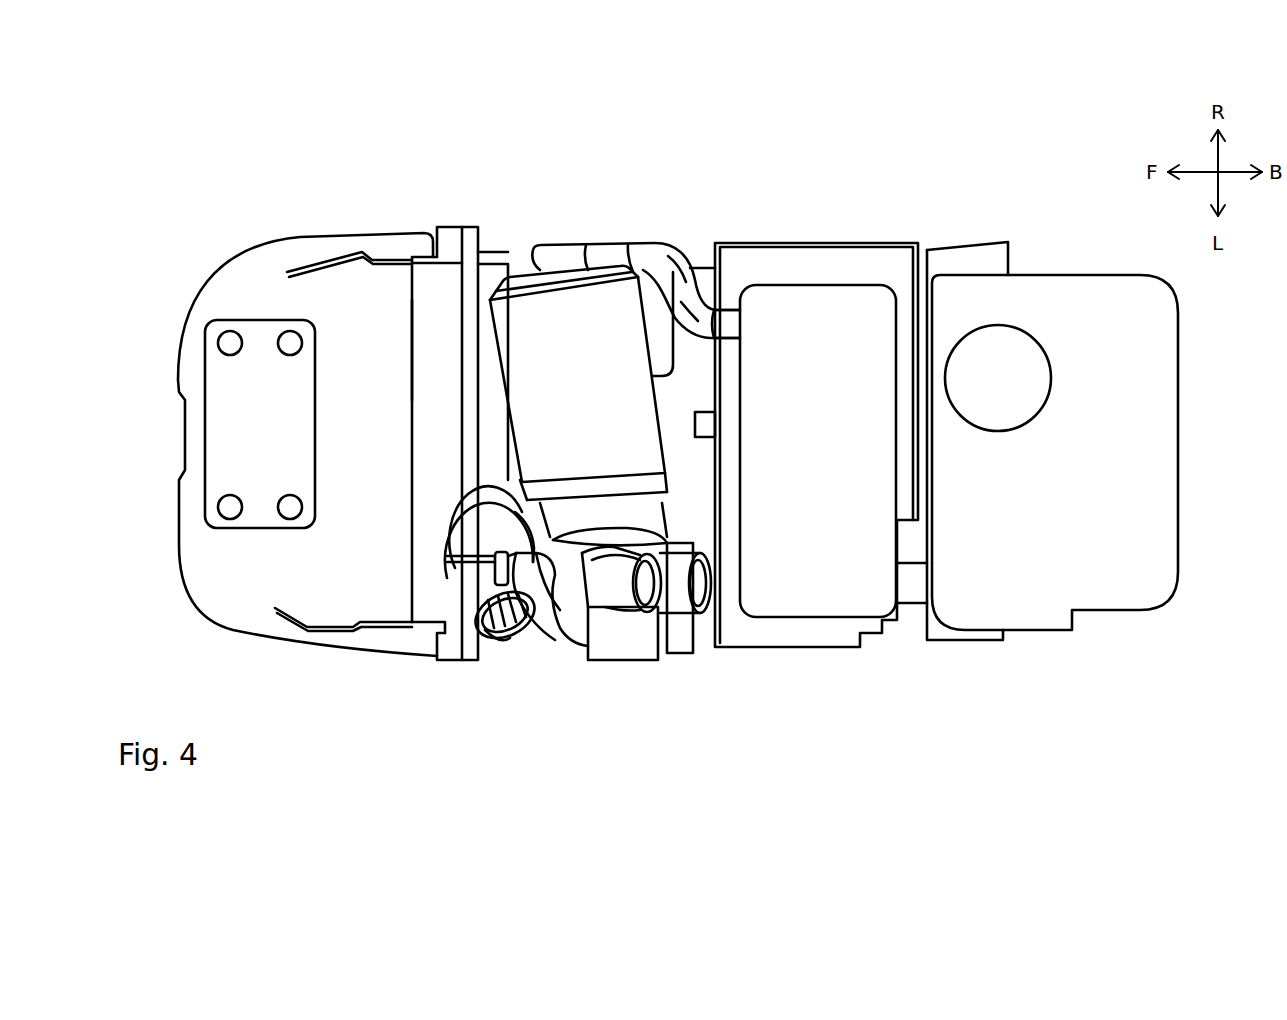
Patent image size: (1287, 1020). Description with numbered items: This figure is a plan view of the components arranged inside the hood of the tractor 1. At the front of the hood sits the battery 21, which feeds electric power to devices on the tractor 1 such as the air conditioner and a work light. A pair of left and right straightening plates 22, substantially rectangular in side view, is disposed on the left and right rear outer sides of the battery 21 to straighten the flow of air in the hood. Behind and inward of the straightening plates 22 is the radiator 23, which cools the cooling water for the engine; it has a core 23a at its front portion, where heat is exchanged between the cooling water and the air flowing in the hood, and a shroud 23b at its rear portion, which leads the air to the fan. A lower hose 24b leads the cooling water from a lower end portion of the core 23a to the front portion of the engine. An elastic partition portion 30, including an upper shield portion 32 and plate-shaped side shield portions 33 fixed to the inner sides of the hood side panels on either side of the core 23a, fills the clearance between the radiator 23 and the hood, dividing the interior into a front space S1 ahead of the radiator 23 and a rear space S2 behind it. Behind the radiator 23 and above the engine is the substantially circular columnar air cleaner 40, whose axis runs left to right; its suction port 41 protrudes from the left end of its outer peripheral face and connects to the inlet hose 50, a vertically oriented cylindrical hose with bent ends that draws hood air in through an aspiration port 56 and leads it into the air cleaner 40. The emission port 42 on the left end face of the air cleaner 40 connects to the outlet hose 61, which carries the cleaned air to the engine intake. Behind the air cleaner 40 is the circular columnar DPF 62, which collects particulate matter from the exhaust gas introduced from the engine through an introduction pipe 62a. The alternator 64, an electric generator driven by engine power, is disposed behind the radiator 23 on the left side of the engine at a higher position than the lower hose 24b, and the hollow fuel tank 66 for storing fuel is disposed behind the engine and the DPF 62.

The tractor 1 is at (186, 135).
The battery 21 is at (217, 431).
The straightening plates 22 is at (305, 272).
The radiator 23 is at (410, 296).
The core 23a is at (420, 350).
The shroud 23b is at (488, 403).
The lower hose 24b is at (577, 640).
The partition portion 30 is at (464, 203).
The upper shield portion 32 is at (472, 296).
The side shield portions 33 is at (448, 240).
The air cleaner 40 is at (583, 262).
The suction port 41 is at (500, 516).
The emission port 42 is at (605, 592).
The inlet hose 50 is at (502, 645).
The aspiration port 56 is at (497, 546).
The outlet hose 61 is at (688, 600).
The DPF 62 is at (818, 304).
The introduction pipe 62a is at (908, 594).
The alternator 64 is at (640, 652).
The fuel tank 66 is at (1178, 452).
The front space S1 is at (268, 292).
The rear space S2 is at (673, 230).